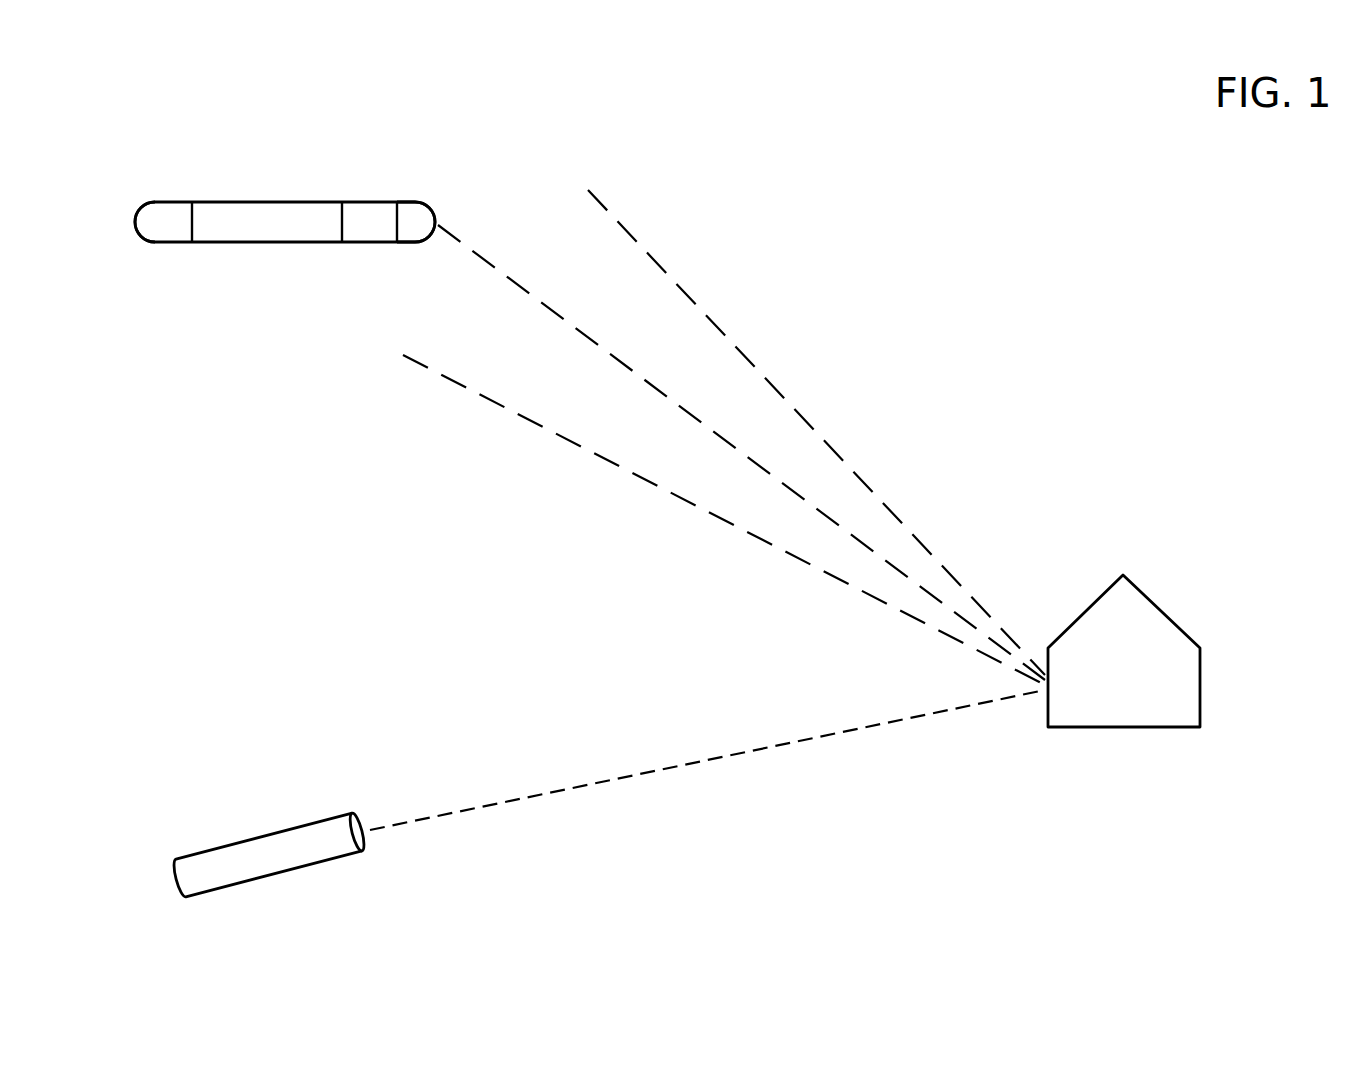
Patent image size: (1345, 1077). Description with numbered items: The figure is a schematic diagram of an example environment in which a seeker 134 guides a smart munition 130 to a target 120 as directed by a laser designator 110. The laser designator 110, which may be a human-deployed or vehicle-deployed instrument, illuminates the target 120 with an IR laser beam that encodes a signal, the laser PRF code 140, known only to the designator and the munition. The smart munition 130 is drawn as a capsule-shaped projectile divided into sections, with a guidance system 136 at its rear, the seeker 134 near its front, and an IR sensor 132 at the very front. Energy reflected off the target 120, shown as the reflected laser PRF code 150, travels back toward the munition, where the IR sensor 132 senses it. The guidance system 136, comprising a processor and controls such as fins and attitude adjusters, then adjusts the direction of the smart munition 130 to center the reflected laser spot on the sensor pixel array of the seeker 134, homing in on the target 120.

The laser designator 110 is at (275, 872).
The target 120 is at (1124, 651).
The smart munition 130 is at (290, 242).
The IR sensor 132 is at (417, 213).
The seeker 134 is at (370, 213).
The guidance system 136 is at (165, 223).
The laser PRF code 140 is at (708, 758).
The reflected laser PRF code 150 is at (653, 483).